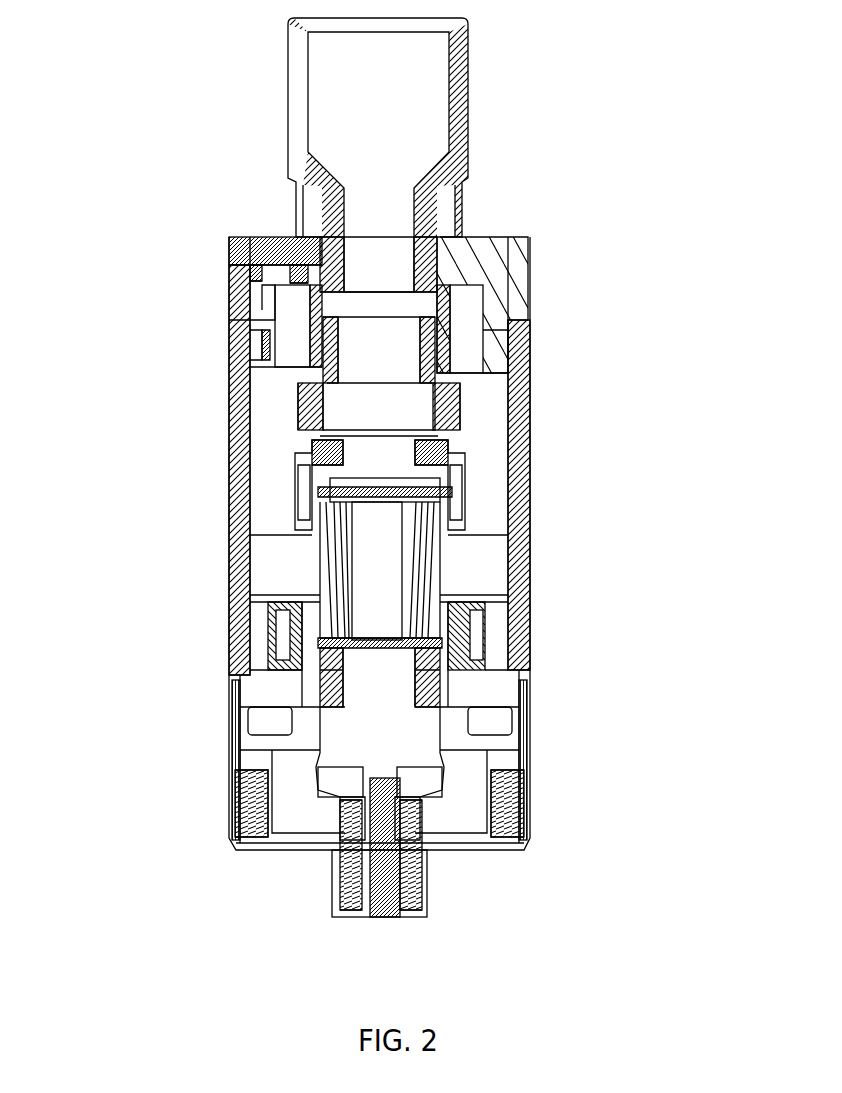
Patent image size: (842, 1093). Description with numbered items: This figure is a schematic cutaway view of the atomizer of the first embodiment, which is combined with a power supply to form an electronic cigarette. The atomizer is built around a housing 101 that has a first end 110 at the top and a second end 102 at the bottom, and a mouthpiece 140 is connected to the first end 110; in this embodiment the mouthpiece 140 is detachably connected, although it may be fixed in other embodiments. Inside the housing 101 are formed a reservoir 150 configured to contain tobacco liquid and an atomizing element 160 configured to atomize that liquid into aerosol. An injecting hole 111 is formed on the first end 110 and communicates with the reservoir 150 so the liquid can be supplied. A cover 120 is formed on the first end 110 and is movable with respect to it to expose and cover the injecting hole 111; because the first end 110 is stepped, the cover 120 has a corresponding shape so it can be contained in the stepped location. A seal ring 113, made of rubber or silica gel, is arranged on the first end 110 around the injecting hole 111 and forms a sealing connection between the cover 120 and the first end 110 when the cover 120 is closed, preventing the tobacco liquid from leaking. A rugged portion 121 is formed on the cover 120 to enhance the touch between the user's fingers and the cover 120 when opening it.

The housing 101 is at (530, 497).
The second end 102 is at (428, 885).
The first end 110 is at (530, 278).
The injecting hole 111 is at (270, 280).
The seal ring 113 is at (227, 280).
The cover 120 is at (225, 278).
The rugged portion 121 is at (263, 237).
The mouthpiece 140 is at (468, 110).
The reservoir 150 is at (265, 485).
The atomizing element 160 is at (317, 546).